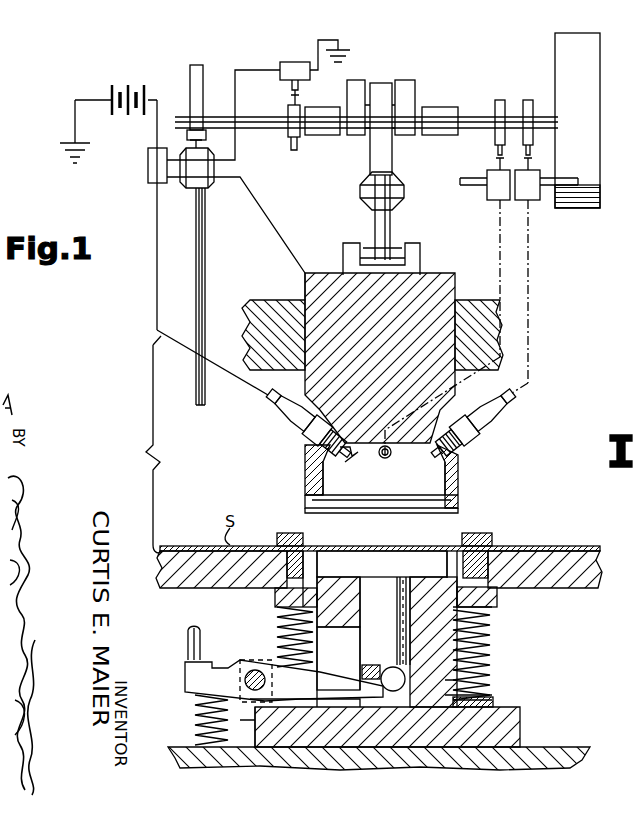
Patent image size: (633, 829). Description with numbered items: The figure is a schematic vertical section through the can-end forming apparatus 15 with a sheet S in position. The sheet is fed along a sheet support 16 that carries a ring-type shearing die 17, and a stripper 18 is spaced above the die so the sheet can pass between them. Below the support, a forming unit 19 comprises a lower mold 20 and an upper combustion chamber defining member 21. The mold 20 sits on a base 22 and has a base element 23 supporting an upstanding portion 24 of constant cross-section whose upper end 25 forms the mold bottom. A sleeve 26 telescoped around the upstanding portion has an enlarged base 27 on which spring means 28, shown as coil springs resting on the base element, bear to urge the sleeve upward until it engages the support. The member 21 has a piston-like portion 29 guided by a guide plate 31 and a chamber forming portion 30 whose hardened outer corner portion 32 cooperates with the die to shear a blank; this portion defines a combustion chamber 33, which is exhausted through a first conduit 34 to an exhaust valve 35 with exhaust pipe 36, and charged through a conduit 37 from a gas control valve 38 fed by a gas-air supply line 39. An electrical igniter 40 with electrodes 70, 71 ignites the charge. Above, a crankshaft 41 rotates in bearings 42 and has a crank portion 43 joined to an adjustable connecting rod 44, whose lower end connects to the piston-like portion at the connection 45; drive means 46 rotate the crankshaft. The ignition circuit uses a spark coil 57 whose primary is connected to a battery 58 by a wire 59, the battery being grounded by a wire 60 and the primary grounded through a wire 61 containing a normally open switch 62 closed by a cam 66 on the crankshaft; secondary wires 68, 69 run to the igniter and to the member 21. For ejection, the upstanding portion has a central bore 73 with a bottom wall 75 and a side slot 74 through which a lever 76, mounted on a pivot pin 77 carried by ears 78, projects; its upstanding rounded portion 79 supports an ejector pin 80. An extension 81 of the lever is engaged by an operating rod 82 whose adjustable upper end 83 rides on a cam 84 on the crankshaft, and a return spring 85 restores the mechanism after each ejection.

The apparatus 15 is at (501, 463).
The sheet support 16 is at (548, 578).
The shearing die 17 is at (492, 560).
The stripper 18 is at (487, 545).
The forming unit 19 is at (295, 482).
The lower mold 20 is at (505, 665).
The combustion chamber defining member 21 is at (300, 288).
The base 22 is at (560, 747).
The base element 23 is at (500, 722).
The upstanding portion 24 is at (490, 650).
The upper end 25 is at (320, 578).
The sleeve 26 is at (442, 548).
The enlarged base 27 is at (276, 595).
The spring means 28 is at (280, 630).
The piston-like portion 29 is at (443, 282).
The chamber forming portion 30 is at (460, 480).
The guide plate 31 is at (255, 300).
The hardened outer corner portion 32 is at (460, 512).
The combustion chamber 33 is at (375, 495).
The first conduit 34 is at (392, 455).
The exhaust valve 35 is at (490, 192).
The exhaust pipe 36 is at (462, 178).
The conduit 37 is at (480, 415).
The gas control valve 38 is at (538, 200).
The gas-air supply line 39 is at (565, 178).
The electrical igniter 40 is at (292, 420).
The crankshaft 41 is at (468, 117).
The bearings 42 is at (330, 135).
The crank portion 43 is at (410, 86).
The connecting rod 44 is at (392, 225).
The connection 45 is at (408, 245).
The drive means 46 is at (590, 57).
The spark coil 57 is at (150, 163).
The battery 58 is at (143, 85).
The wire 59 is at (157, 128).
The wire 60 is at (75, 100).
The wire 61 is at (235, 88).
The switch 62 is at (305, 42).
The cam 66 is at (290, 135).
The wire 68 is at (157, 296).
The wire 69 is at (268, 218).
The electrode 70 is at (350, 458).
The electrode 71 is at (365, 458).
The central bore 73 is at (490, 676).
The slot 74 is at (336, 700).
The bottom wall 75 is at (386, 696).
The lever 76 is at (260, 672).
The pivot pin 77 is at (242, 668).
The ears 78 is at (243, 700).
The upstanding rounded portion 79 is at (364, 680).
The ejector pin 80 is at (372, 650).
The extension 81 is at (187, 664).
The operating rod 82 is at (196, 390).
The adjustable upper end 83 is at (208, 186).
The cam 84 is at (204, 65).
The return spring 85 is at (192, 720).